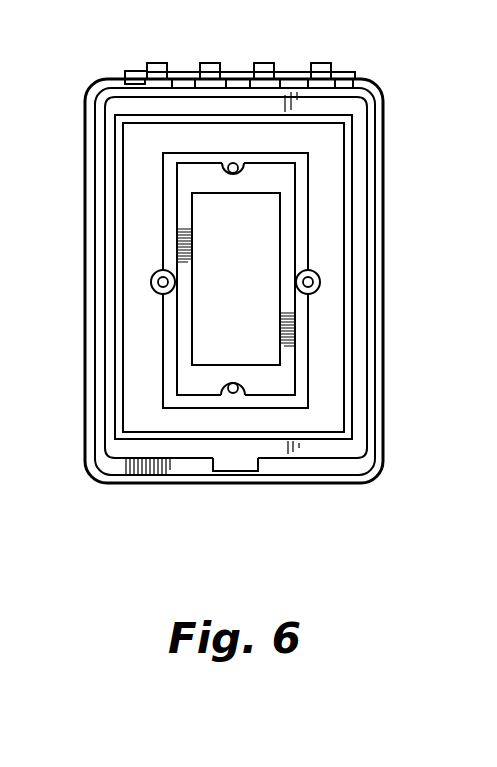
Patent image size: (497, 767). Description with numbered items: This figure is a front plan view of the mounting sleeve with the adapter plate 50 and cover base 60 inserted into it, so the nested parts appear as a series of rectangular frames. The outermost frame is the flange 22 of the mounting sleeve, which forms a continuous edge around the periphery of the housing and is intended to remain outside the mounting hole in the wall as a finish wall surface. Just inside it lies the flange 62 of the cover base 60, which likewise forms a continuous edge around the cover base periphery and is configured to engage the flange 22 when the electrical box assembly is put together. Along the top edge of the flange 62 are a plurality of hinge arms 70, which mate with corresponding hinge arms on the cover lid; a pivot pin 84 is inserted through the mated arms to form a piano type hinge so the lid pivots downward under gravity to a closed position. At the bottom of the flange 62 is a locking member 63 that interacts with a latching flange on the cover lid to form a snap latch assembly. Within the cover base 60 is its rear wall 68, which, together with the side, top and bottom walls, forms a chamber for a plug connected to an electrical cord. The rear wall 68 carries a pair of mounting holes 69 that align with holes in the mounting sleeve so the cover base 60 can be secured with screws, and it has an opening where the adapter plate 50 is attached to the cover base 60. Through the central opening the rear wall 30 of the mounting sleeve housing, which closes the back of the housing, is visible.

The flange 22 is at (385, 110).
The rear wall 30 is at (251, 234).
The adapter plate 50 is at (284, 187).
The cover base 60 is at (105, 211).
The flange 62 is at (323, 447).
The locking member 63 is at (238, 462).
The rear wall 68 is at (172, 330).
The mounting holes 69 is at (169, 282).
The hinge arms 70 is at (161, 63).
The pivot pin 84 is at (128, 71).